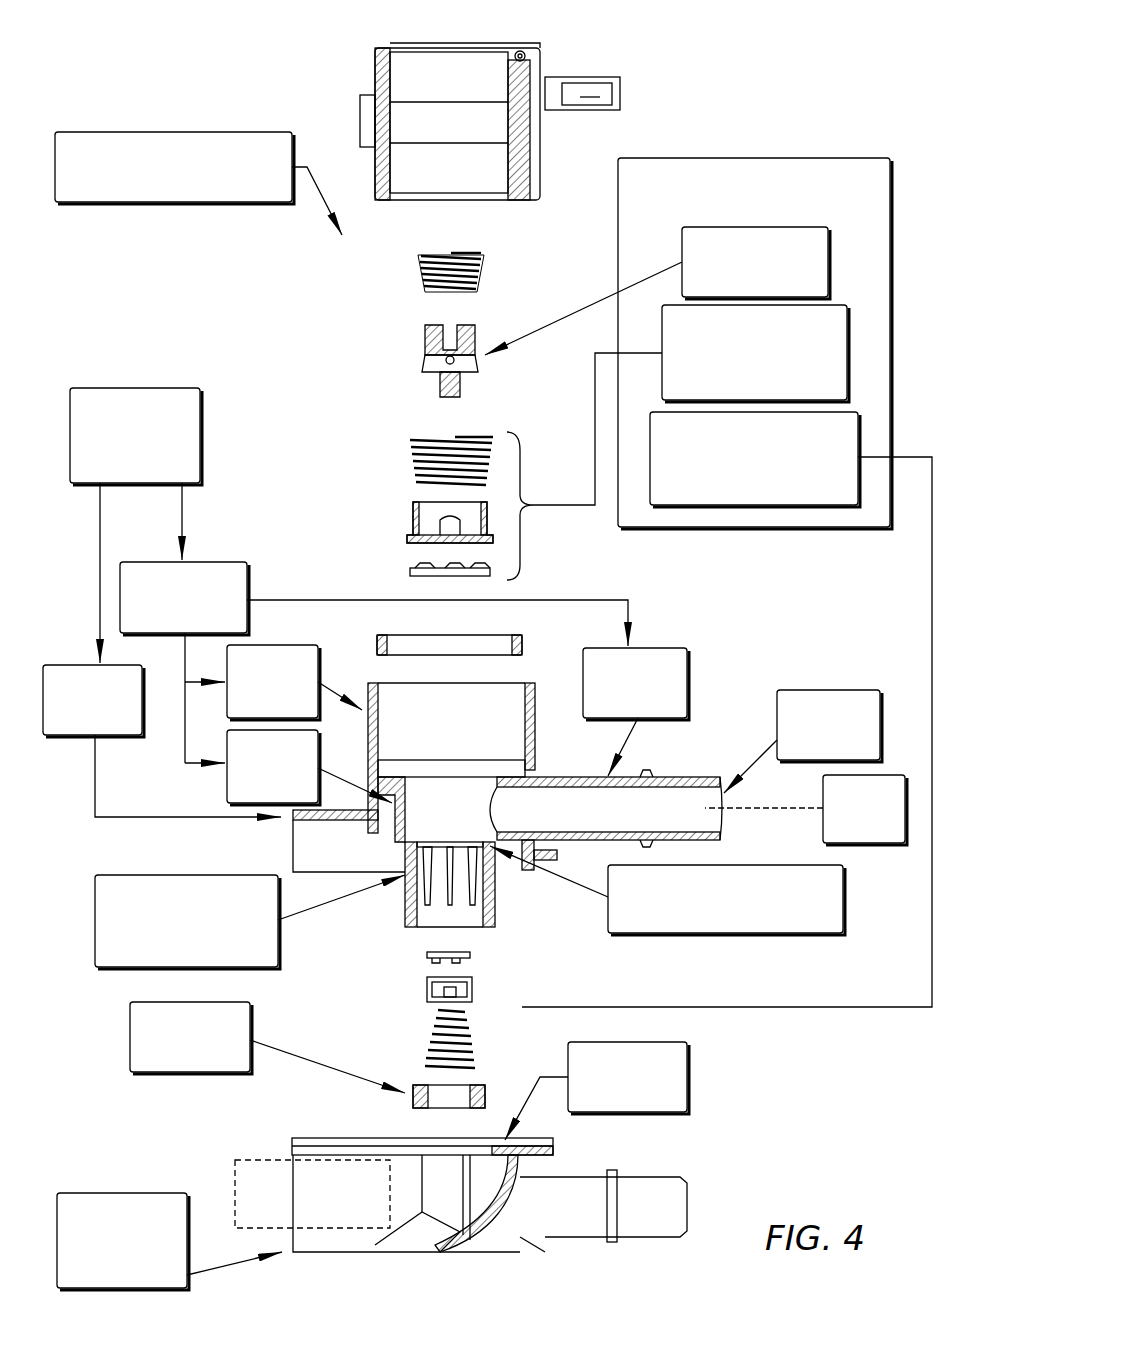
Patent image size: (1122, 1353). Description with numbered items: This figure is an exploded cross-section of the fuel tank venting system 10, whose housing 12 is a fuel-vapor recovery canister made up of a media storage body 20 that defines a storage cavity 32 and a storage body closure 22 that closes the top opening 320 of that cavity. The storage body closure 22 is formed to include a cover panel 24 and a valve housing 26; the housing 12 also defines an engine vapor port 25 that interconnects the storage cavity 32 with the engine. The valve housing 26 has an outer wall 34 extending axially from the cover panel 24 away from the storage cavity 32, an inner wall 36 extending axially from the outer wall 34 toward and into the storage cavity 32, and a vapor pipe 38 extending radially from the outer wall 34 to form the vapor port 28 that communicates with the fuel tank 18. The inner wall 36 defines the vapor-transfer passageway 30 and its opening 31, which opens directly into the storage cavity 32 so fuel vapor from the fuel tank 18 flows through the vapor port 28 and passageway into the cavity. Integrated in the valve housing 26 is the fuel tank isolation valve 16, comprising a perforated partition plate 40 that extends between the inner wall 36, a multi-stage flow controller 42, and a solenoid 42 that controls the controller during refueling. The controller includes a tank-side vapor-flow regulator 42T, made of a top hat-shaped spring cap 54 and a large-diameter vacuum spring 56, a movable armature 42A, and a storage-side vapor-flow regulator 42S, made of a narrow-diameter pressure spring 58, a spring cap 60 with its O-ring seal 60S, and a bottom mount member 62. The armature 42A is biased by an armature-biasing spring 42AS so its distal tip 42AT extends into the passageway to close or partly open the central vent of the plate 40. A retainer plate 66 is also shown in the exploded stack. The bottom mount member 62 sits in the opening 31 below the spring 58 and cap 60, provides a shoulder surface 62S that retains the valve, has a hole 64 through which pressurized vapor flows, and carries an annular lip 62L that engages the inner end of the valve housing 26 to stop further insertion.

The fuel tank venting system 10 is at (222, 72).
The housing 12 is at (172, 318).
The fuel tank isolation valve 16 is at (163, 132).
The fuel tank 18 is at (905, 810).
The media storage body 20 is at (122, 1193).
The storage body closure 22 is at (130, 388).
The cover panel 24 is at (88, 665).
The engine vapor port 25 is at (703, 1195).
The valve housing 26 is at (212, 562).
The vapor port 28 is at (828, 690).
The vapor-transfer passageway 30 is at (112, 875).
The opening 31 is at (470, 913).
The storage cavity 32 is at (262, 1160).
The outer wall 34 is at (293, 645).
The inner wall 36 is at (227, 775).
The vapor pipe 38 is at (660, 648).
The perforated partition plate 40 is at (742, 865).
The solenoid / multi-stage flow controller 42 is at (450, 100).
The movable armature 42A is at (828, 262).
The armature-biasing spring 42AS is at (412, 278).
The distal tip 42AT is at (450, 398).
The storage-side vapor-flow regulator 42S is at (858, 433).
The tank-side vapor-flow regulator 42T is at (847, 352).
The spring cap 54 is at (405, 520).
The compression spring 56 is at (395, 437).
The compression spring 58 is at (418, 1045).
The spring cap 60 is at (420, 982).
The O-ring seal 60S is at (412, 948).
The bottom mount member 62 is at (130, 1030).
The annular lip 62L is at (412, 1095).
The shoulder surface 62S is at (417, 1085).
The hole 64 is at (445, 1100).
The retainer plate 66 is at (405, 568).
The top opening 320 is at (687, 1075).